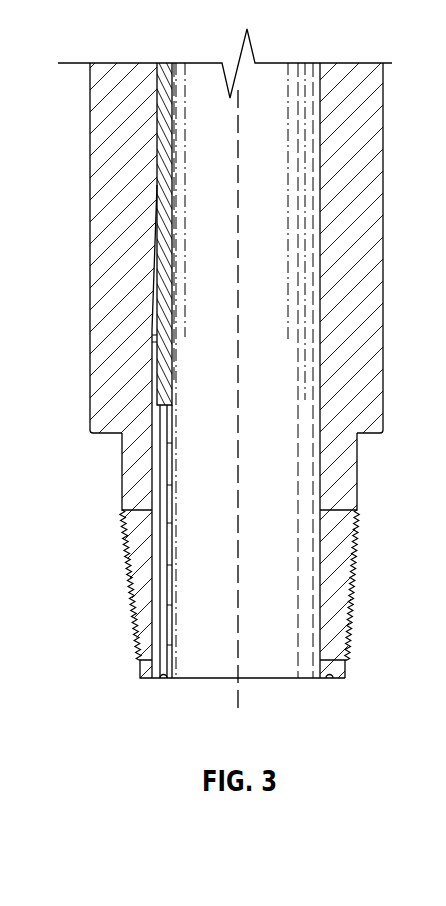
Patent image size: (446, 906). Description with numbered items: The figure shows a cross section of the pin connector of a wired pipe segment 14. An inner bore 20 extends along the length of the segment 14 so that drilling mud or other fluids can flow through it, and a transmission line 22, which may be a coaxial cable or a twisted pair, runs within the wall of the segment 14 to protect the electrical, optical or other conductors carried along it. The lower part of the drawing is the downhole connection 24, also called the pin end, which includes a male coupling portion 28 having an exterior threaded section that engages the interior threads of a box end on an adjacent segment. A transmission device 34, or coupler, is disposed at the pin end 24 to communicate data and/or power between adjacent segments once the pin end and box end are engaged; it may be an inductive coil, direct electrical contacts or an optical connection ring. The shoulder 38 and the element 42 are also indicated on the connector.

The wired pipe segment 14 is at (370, 178).
The inner bore 20 is at (180, 168).
The transmission line 22 is at (165, 375).
The downhole connection 24 is at (133, 478).
The male coupling portion 28 is at (355, 555).
The transmission device 34 is at (163, 680).
The shoulder 38 is at (357, 455).
The seal ring 42 is at (345, 668).